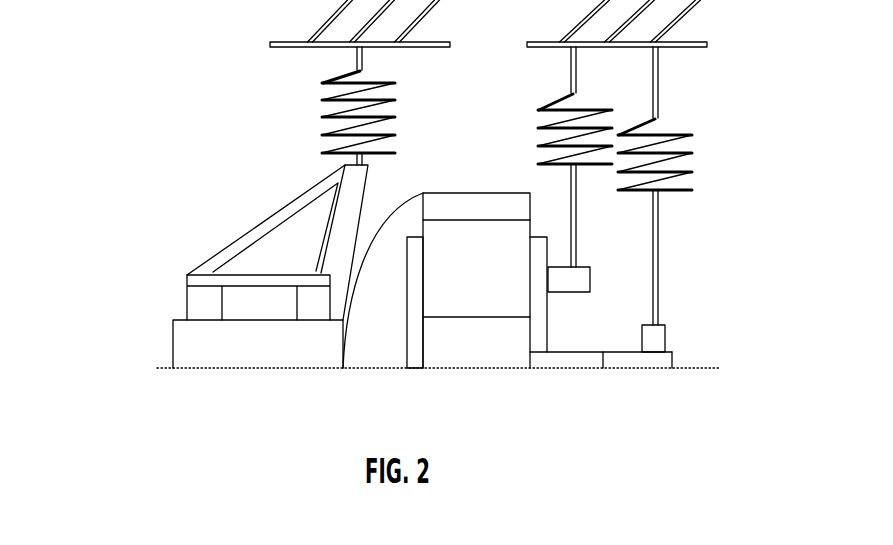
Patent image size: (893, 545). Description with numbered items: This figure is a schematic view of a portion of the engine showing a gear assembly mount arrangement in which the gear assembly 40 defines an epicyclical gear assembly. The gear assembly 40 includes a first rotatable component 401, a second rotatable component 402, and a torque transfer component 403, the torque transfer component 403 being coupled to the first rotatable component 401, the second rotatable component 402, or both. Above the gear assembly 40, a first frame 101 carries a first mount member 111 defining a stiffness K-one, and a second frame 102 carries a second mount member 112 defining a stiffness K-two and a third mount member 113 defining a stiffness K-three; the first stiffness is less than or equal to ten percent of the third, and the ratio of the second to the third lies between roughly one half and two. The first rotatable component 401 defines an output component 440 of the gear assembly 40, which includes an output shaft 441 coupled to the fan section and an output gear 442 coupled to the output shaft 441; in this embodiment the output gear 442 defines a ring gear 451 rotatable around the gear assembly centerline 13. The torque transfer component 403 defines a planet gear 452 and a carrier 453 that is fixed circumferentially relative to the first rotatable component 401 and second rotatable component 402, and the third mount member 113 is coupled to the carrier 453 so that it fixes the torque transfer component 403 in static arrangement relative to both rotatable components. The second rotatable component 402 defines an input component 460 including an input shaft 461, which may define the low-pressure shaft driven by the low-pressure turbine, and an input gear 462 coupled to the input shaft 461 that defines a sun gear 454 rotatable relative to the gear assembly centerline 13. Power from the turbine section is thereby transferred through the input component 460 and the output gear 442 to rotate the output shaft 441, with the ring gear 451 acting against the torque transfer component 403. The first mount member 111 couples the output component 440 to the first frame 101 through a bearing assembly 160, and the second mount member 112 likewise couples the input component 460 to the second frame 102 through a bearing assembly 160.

The gear assembly centerline 13 is at (707, 370).
The gear assembly 40 is at (436, 274).
The first frame 101 is at (287, 41).
The second frame 102 is at (695, 42).
The first mount member 111 is at (322, 82).
The second mount member 112 is at (660, 84).
The third mount member 113 is at (578, 84).
The bearing assembly 160 is at (197, 310).
The first rotatable component 401 is at (203, 369).
The second rotatable component 402 is at (575, 350).
The torque transfer component 403 is at (590, 283).
The output component 440 is at (150, 335).
The output shaft 441 is at (215, 350).
The output gear 442 is at (433, 200).
The ring gear 451 is at (472, 200).
The planet gear 452 is at (493, 281).
The carrier 453 is at (551, 297).
The sun gear 454 is at (463, 358).
The input component 460 is at (601, 382).
The input shaft 461 is at (603, 355).
The input gear 462 is at (503, 358).